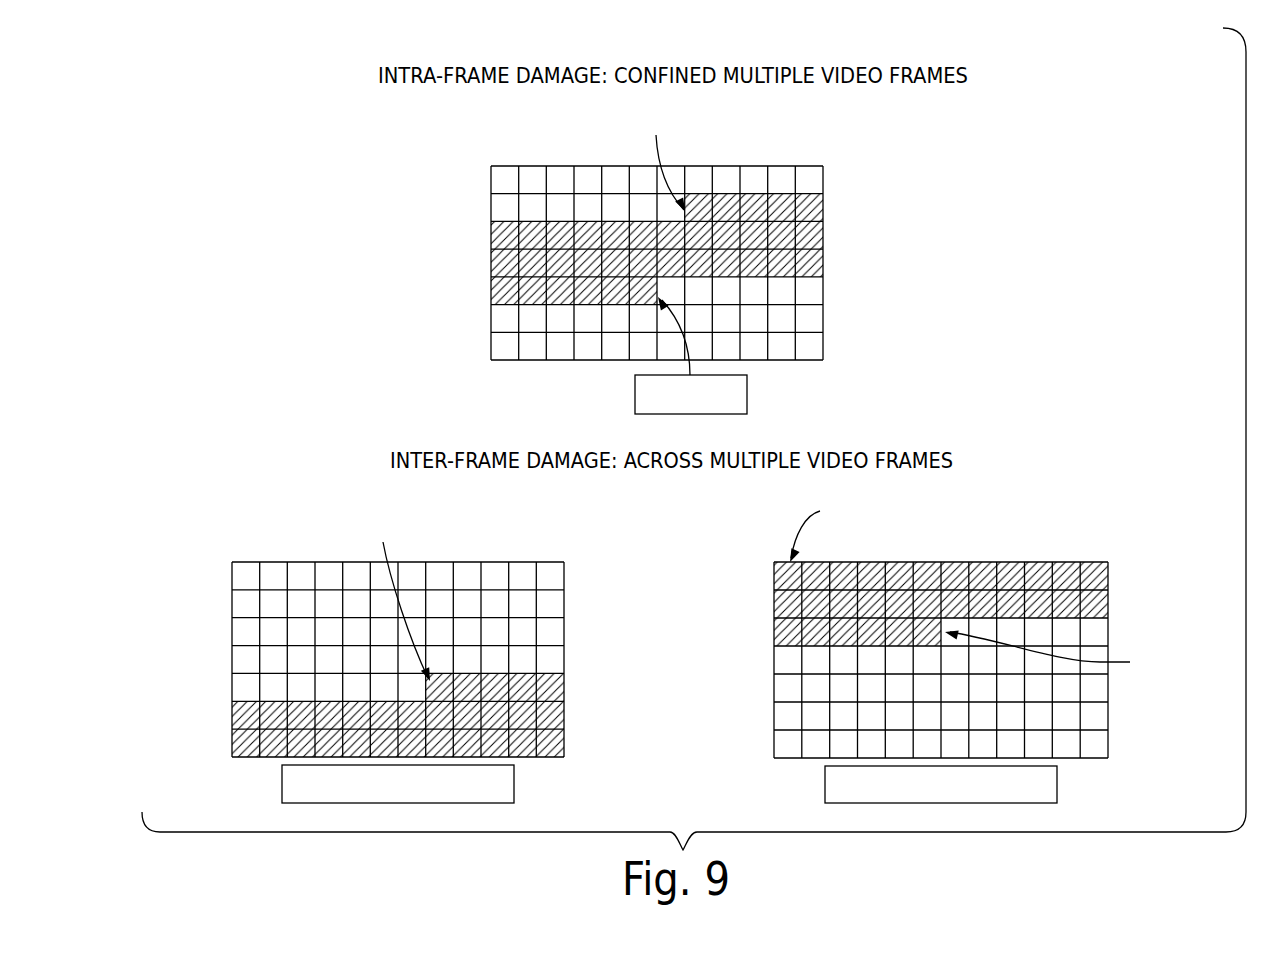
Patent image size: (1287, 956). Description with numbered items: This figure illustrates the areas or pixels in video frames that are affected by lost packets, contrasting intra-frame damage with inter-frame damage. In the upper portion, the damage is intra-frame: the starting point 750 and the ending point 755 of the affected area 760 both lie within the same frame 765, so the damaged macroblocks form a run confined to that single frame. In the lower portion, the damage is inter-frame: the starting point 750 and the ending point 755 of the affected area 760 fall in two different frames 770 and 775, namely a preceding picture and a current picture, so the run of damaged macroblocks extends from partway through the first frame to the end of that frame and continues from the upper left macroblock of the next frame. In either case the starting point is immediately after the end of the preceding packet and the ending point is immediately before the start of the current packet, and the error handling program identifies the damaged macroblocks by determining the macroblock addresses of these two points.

The starting point 750 is at (712, 131).
The ending point 755 is at (747, 398).
The affected area 760 is at (491, 268).
The frame 765 is at (852, 218).
The preceding frame 770 is at (541, 548).
The current frame 775 is at (970, 538).